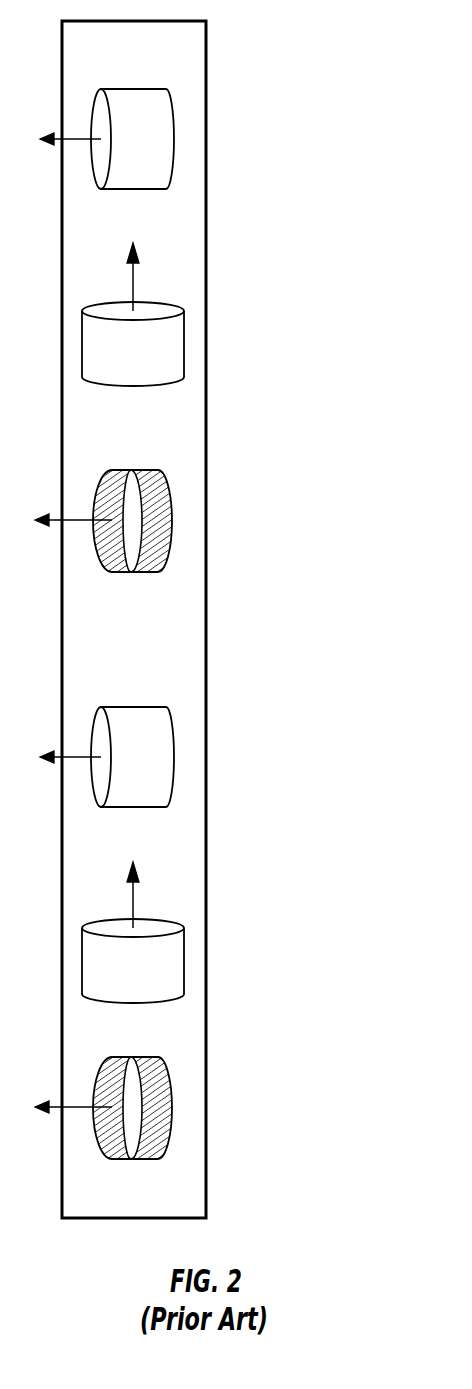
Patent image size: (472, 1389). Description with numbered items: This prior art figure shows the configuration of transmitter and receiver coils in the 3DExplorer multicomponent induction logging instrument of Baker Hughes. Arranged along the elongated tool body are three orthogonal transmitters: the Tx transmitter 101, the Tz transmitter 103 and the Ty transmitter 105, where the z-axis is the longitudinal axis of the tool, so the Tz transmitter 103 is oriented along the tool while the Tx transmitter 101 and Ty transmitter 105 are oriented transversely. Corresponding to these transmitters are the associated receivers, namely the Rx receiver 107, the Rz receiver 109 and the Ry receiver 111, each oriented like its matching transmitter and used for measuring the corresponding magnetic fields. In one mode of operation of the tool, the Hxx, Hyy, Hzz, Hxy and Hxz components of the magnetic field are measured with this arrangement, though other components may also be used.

The Tx transmitter 101 is at (257, 143).
The Tz transmitter 103 is at (257, 351).
The Ty transmitter 105 is at (257, 524).
The Rx receiver 107 is at (257, 760).
The Rz receiver 109 is at (257, 961).
The Ry receiver 111 is at (257, 1111).